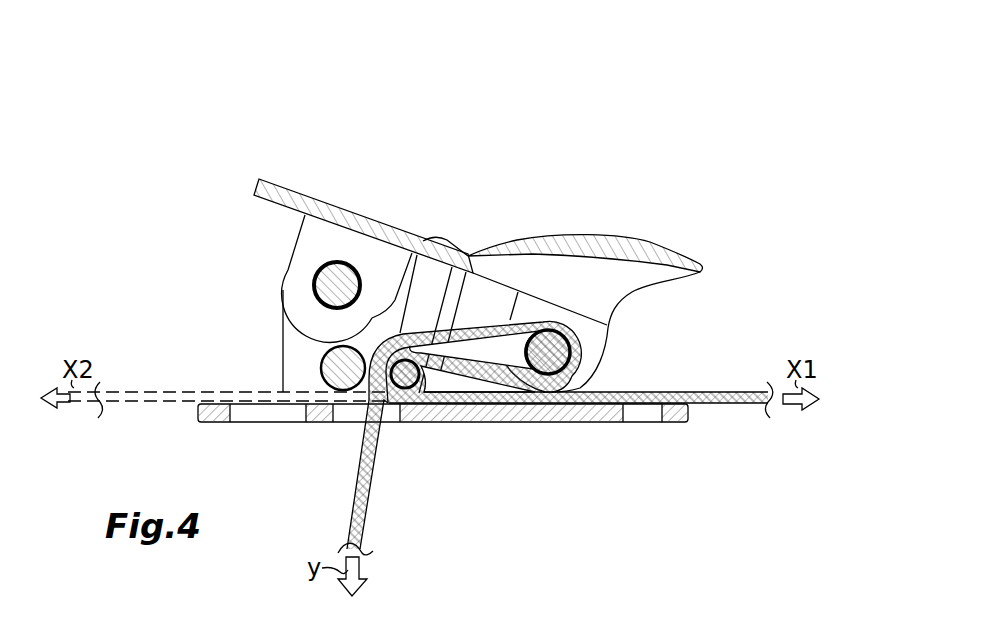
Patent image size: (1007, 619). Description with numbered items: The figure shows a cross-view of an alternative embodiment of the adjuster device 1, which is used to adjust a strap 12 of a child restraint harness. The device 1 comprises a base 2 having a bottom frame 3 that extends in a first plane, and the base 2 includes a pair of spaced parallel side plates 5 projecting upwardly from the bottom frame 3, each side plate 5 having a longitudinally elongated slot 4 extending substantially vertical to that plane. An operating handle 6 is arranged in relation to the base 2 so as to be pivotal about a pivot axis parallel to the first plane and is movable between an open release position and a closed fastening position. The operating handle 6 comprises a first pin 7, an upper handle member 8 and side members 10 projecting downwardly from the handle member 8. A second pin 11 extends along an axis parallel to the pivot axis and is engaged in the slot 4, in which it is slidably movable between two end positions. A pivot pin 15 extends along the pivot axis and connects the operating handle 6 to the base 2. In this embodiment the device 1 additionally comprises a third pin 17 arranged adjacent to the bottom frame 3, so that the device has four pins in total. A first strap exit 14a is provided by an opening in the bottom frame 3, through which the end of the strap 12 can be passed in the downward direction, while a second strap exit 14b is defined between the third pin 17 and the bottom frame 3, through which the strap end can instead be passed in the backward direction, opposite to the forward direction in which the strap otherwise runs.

The adjuster device 1 is at (722, 156).
The base 2 is at (210, 365).
The bottom frame 3 is at (588, 413).
The longitudinally elongated slot 4 is at (430, 277).
The side plate 5 is at (308, 343).
The operating handle 6 is at (213, 183).
The first pin 7 is at (556, 358).
The upper handle member 8 is at (622, 293).
The second pair of spaced parallel side members 10 is at (308, 238).
The second pin 11 is at (403, 378).
The strap 12 is at (710, 397).
The first strap exit 14a is at (376, 442).
The second strap exit 14b is at (238, 397).
The pivot pin 15 is at (327, 282).
The third pin 17 is at (332, 375).